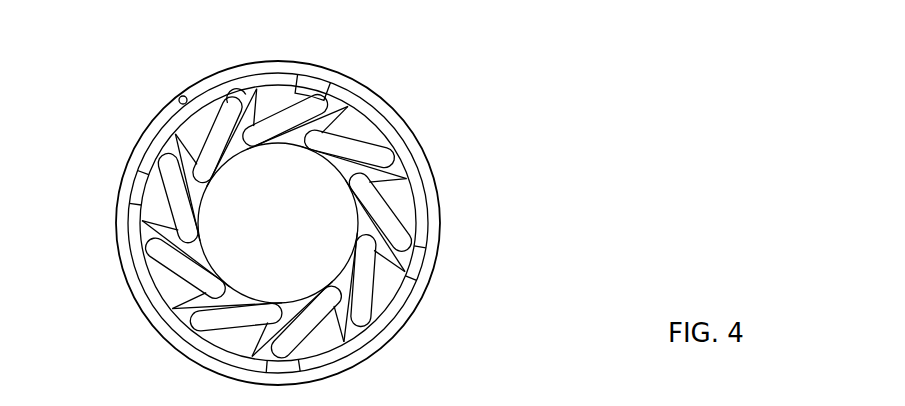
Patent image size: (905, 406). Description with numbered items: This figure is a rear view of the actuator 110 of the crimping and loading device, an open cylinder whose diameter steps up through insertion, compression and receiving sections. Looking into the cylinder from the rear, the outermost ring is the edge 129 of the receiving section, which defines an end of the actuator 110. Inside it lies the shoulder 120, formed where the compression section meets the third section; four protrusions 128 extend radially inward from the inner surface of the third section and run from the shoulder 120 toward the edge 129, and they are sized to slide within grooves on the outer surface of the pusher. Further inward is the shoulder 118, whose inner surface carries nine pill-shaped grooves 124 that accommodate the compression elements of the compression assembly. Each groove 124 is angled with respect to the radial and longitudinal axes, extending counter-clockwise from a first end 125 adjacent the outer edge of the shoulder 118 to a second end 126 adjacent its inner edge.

The actuator 110 is at (425, 317).
The shoulder 118 is at (257, 103).
The shoulder 120 is at (423, 195).
The groove 124 is at (219, 125).
The first end 125 is at (226, 100).
The second end 126 is at (195, 182).
The protrusion 128 is at (412, 271).
The edge 129 is at (390, 117).